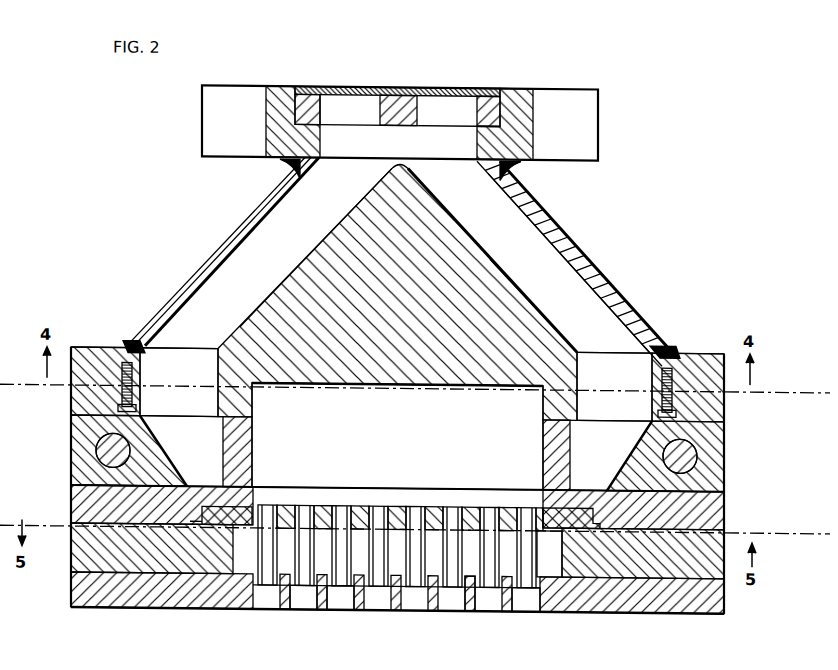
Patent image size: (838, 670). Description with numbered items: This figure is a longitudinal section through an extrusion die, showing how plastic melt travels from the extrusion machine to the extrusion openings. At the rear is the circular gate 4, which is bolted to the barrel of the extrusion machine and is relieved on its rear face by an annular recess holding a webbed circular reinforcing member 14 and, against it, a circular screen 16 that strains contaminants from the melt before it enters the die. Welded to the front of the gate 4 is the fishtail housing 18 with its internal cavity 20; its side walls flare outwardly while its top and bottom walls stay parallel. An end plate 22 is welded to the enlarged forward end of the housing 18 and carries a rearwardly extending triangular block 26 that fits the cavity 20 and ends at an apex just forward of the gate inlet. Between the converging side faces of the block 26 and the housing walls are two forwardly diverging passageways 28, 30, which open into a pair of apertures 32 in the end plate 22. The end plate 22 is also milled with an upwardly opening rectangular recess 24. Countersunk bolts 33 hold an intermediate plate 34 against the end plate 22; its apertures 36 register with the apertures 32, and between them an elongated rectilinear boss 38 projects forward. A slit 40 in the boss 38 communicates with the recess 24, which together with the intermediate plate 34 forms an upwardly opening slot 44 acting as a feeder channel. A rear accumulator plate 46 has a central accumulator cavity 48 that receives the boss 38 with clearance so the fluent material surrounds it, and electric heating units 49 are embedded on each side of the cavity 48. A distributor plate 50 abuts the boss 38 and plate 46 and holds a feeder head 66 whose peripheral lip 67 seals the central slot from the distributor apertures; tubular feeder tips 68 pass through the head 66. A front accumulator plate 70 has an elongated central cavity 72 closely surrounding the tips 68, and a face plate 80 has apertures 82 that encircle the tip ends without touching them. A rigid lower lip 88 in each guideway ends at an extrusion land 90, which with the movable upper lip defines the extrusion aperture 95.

The circular gate 4 is at (600, 141).
The webbed circular reinforcing member 14 is at (306, 100).
The circular screen 16 is at (485, 90).
The fishtail housing 18 is at (627, 300).
The internal cavity 20 is at (580, 258).
The end plate 22 is at (82, 352).
The rectangular recess 24 is at (265, 370).
The triangular block 26 is at (430, 255).
The passageway 28 is at (275, 213).
The passageway 30 is at (563, 236).
The apertures 32 is at (183, 356).
The countersunk bolts 33 is at (127, 345).
The intermediate plate 34 is at (722, 408).
The apertures 36 is at (230, 397).
The elongated rectilinear boss 38 is at (225, 432).
The slit 40 is at (330, 460).
The upwardly opening slot 44 is at (510, 360).
The rear accumulator plate 46 is at (725, 465).
The central accumulator cavity 48 is at (560, 450).
The electric heating units 49 is at (96, 452).
The distributor plate 50 is at (727, 507).
The feeder head 66 is at (437, 503).
The peripheral lip 67 is at (597, 528).
The tubular feeder tips 68 is at (258, 555).
The front accumulator plate 70 is at (726, 553).
The elongated central cavity 72 is at (553, 565).
The face plate 80 is at (726, 595).
The apertures 82 is at (470, 607).
The rigid lower lip 88 is at (343, 607).
The extrusion land 90 is at (302, 607).
The extrusion aperture 95 is at (527, 607).